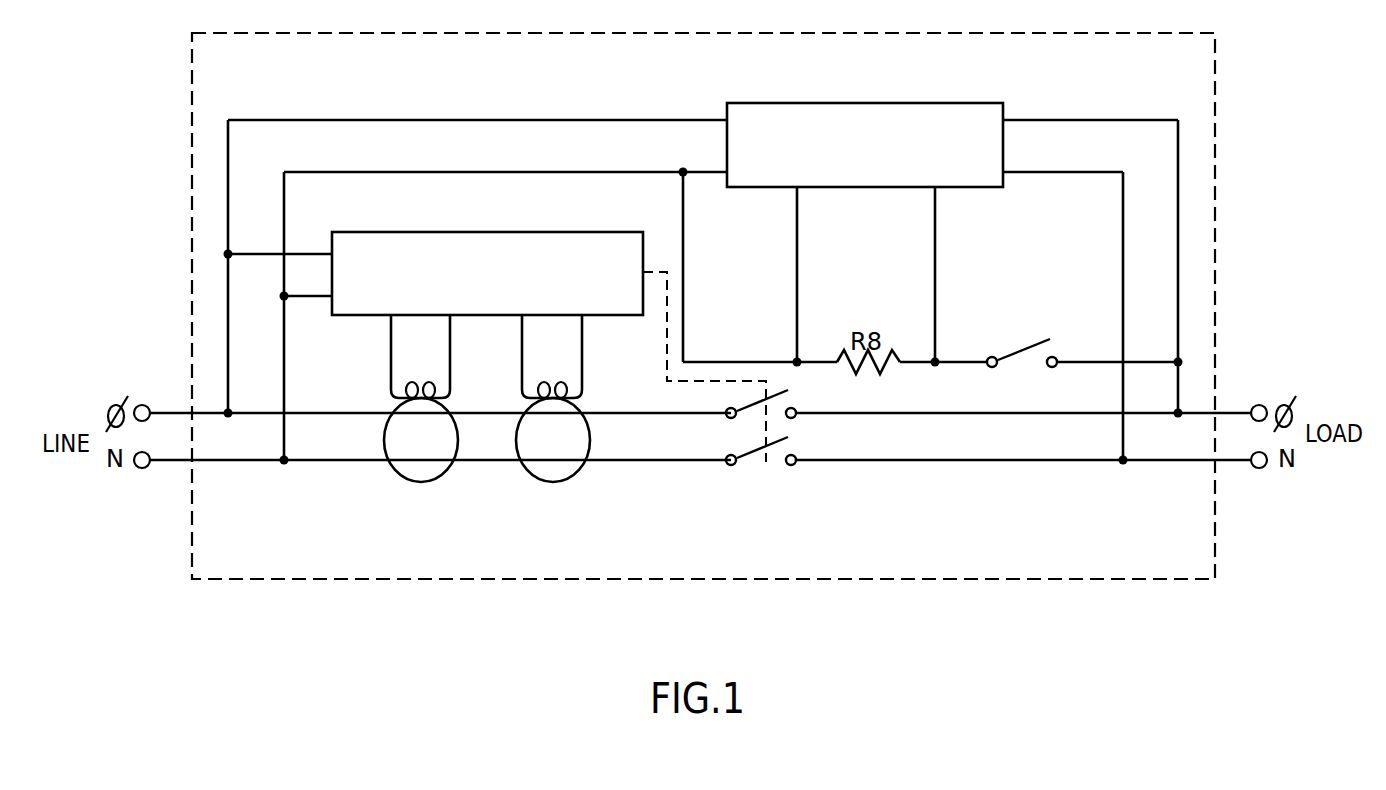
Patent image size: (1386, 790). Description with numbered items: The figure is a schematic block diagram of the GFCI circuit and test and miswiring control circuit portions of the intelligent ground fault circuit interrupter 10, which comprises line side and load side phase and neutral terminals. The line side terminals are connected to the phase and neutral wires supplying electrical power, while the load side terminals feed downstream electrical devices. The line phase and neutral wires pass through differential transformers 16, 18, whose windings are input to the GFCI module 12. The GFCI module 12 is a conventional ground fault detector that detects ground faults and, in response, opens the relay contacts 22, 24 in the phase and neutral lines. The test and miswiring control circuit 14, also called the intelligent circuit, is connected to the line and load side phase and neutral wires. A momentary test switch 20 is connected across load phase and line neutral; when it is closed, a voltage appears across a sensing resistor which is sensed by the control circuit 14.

The intelligent ground fault circuit interrupter 10 is at (382, 589).
The GFCI module 12 is at (463, 231).
The test and miswiring control circuit 14 is at (880, 103).
The differential transformer 16 is at (425, 483).
The differential transformer 18 is at (557, 483).
The momentary test switch 20 is at (1022, 350).
The relay contact 22 is at (793, 393).
The relay contact 24 is at (793, 440).